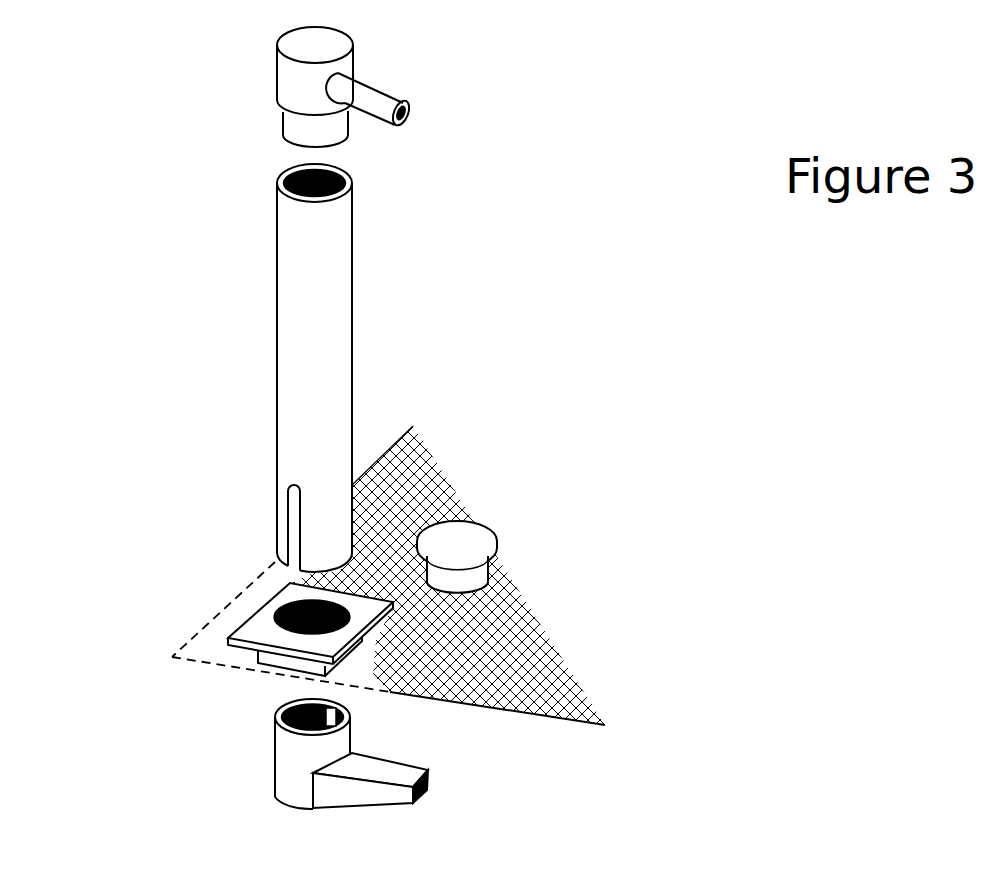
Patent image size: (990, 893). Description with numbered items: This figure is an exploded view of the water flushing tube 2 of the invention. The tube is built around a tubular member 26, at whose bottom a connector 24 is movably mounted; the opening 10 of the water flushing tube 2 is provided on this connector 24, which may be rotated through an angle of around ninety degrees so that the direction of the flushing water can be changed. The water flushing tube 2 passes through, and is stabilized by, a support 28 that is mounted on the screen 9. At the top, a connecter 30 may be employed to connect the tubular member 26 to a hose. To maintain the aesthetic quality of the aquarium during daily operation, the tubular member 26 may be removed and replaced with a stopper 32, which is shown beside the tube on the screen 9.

The water flushing tube 2 is at (275, 324).
The screen 9 is at (590, 707).
The opening 10 is at (425, 787).
The connector 24 is at (278, 802).
The tubular member 26 is at (352, 243).
The support 28 is at (247, 632).
The connecter 30 is at (355, 42).
The stopper 32 is at (497, 542).